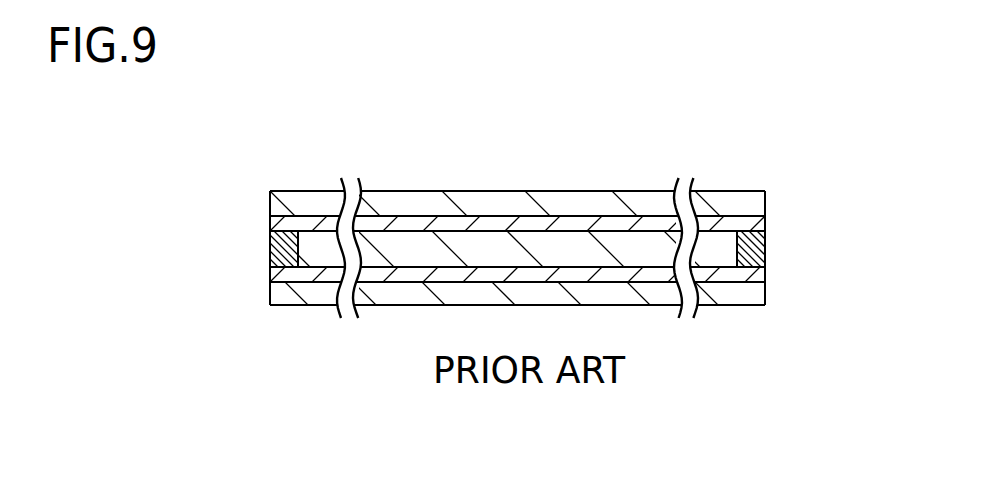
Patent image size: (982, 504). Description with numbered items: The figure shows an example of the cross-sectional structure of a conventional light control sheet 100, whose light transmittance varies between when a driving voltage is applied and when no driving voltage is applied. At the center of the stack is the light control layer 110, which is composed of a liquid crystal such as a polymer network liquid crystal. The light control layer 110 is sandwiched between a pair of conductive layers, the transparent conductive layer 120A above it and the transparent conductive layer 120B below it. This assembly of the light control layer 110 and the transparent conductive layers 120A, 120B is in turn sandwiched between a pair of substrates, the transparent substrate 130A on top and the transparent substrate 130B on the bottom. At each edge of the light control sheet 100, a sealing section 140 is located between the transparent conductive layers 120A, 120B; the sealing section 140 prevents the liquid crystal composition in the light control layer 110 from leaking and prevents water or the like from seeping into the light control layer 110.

The light control sheet 100 is at (279, 170).
The light control layer 110 is at (733, 251).
The transparent conductive layer 120A is at (750, 228).
The transparent conductive layer 120B is at (758, 273).
The transparent substrate 130A is at (758, 202).
The transparent substrate 130B is at (758, 294).
The sealing section 140 is at (270, 242).